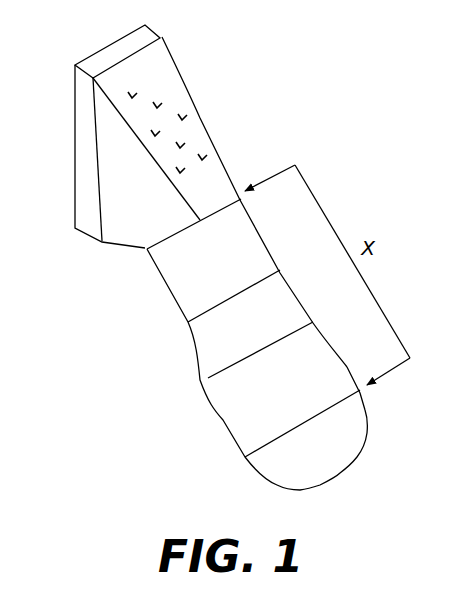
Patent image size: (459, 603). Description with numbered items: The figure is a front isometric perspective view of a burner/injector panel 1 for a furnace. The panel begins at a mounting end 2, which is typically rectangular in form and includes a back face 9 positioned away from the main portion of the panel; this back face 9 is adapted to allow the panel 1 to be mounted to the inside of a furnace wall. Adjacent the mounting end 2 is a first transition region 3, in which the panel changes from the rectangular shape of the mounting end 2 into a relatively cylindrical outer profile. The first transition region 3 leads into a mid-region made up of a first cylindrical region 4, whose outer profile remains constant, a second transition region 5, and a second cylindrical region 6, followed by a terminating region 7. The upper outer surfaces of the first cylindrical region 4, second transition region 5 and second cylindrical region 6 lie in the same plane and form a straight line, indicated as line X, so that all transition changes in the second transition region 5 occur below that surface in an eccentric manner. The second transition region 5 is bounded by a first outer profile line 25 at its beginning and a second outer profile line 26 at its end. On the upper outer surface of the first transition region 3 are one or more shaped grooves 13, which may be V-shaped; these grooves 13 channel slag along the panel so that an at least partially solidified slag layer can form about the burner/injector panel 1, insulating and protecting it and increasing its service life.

The burner/injector panel 1 is at (86, 284).
The mounting end 2 is at (158, 35).
The first transition region 3 is at (200, 118).
The first cylindrical region 4 is at (258, 225).
The second transition region 5 is at (300, 293).
The second cylindrical region 6 is at (335, 348).
The terminating region 7 is at (367, 423).
The back face 9 is at (75, 145).
The shaped grooves 13 is at (158, 71).
The first outer profile line 25 is at (184, 324).
The second outer profile line 26 is at (203, 387).